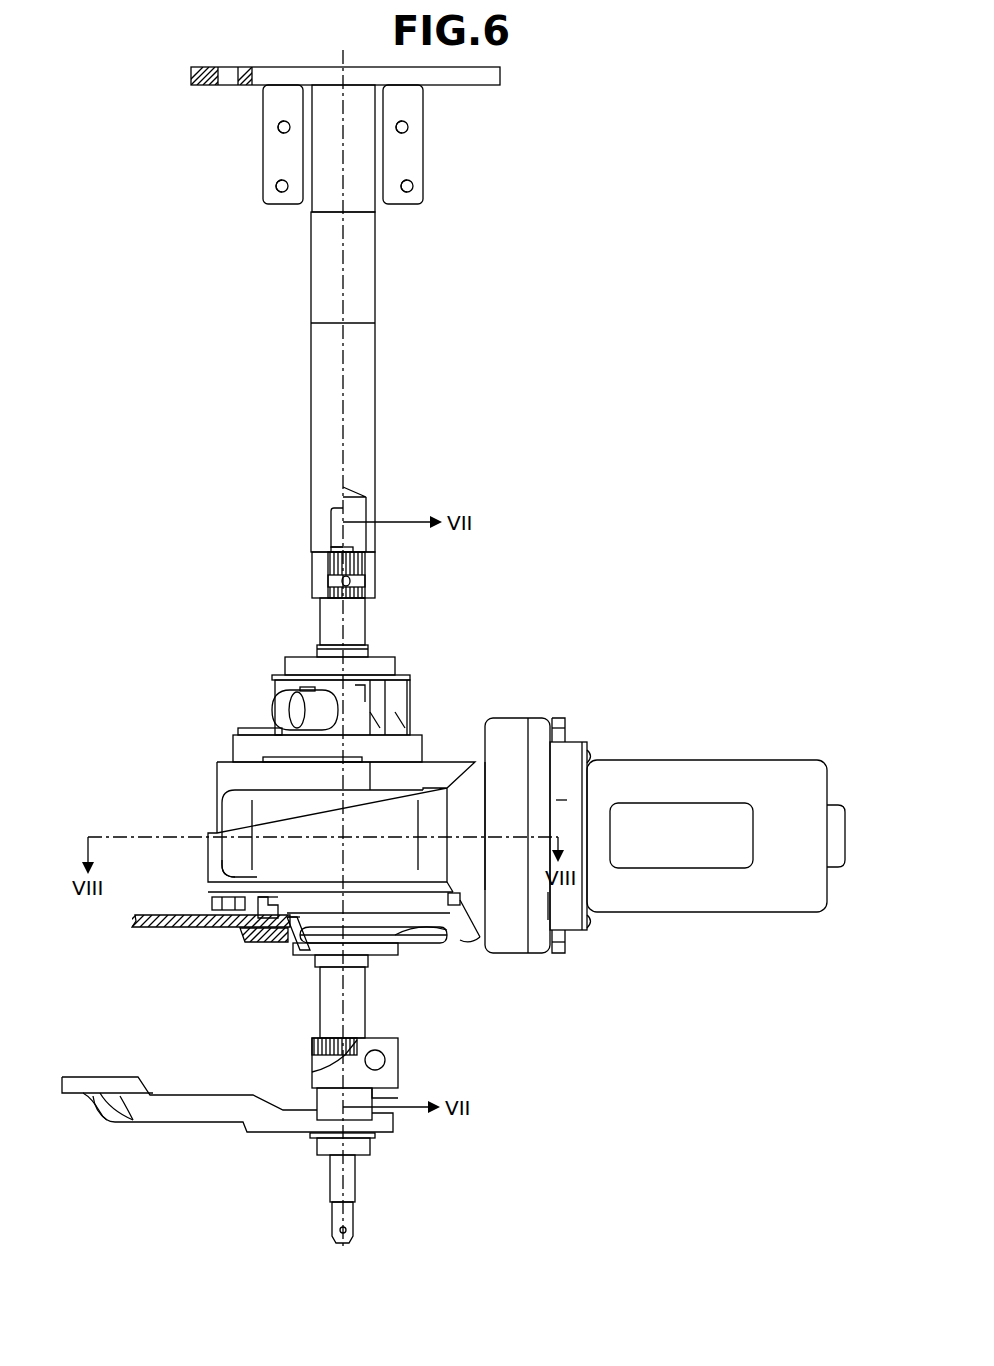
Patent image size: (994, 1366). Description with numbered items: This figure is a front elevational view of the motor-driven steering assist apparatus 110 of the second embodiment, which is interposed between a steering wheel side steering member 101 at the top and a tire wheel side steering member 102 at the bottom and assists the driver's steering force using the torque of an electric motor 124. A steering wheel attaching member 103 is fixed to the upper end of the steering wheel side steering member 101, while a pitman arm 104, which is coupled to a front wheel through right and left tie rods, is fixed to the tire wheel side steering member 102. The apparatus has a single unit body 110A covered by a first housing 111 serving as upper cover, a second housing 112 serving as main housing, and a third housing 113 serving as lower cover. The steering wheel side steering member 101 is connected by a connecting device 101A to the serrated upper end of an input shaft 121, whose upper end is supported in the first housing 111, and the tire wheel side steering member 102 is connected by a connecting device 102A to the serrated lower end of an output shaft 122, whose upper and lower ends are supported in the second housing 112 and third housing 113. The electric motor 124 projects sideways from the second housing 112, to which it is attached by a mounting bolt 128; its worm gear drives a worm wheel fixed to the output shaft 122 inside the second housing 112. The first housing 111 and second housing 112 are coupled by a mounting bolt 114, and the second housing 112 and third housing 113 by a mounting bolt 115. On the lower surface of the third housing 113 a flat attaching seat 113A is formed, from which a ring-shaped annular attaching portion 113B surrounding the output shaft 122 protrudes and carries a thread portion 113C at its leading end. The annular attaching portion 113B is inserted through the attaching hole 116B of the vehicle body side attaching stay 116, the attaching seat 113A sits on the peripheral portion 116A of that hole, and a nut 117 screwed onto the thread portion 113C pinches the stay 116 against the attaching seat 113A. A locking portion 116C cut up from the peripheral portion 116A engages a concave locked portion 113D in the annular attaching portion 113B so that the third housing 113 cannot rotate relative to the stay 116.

The steering wheel side steering member 101 is at (318, 272).
The connecting device 101A is at (312, 565).
The tire wheel side steering member 102 is at (337, 1177).
The connecting device 102A is at (390, 1073).
The steering wheel attaching member 103 is at (200, 77).
The pitman arm 104 is at (173, 1113).
The motor-driven steering assist apparatus 110 is at (211, 640).
The unit body 110A is at (455, 712).
The first housing 111 is at (275, 707).
The second housing 112 is at (218, 776).
The third housing 113 is at (393, 888).
The attaching seat 113A is at (465, 935).
The annular attaching portion 113B is at (265, 935).
The thread portion 113C is at (292, 950).
The locked portion 113D is at (267, 905).
The mounting bolt 114 is at (238, 732).
The mounting bolt 115 is at (212, 903).
The vehicle body side attaching stay 116 is at (148, 930).
The peripheral portion 116A is at (300, 905).
The attaching hole 116B is at (290, 925).
The locking portion 116C is at (230, 870).
The nut 117 is at (420, 940).
The input shaft 121 is at (325, 622).
The output shaft 122 is at (360, 1015).
The electric motor 124 is at (774, 760).
The mounting bolt 128 is at (558, 950).